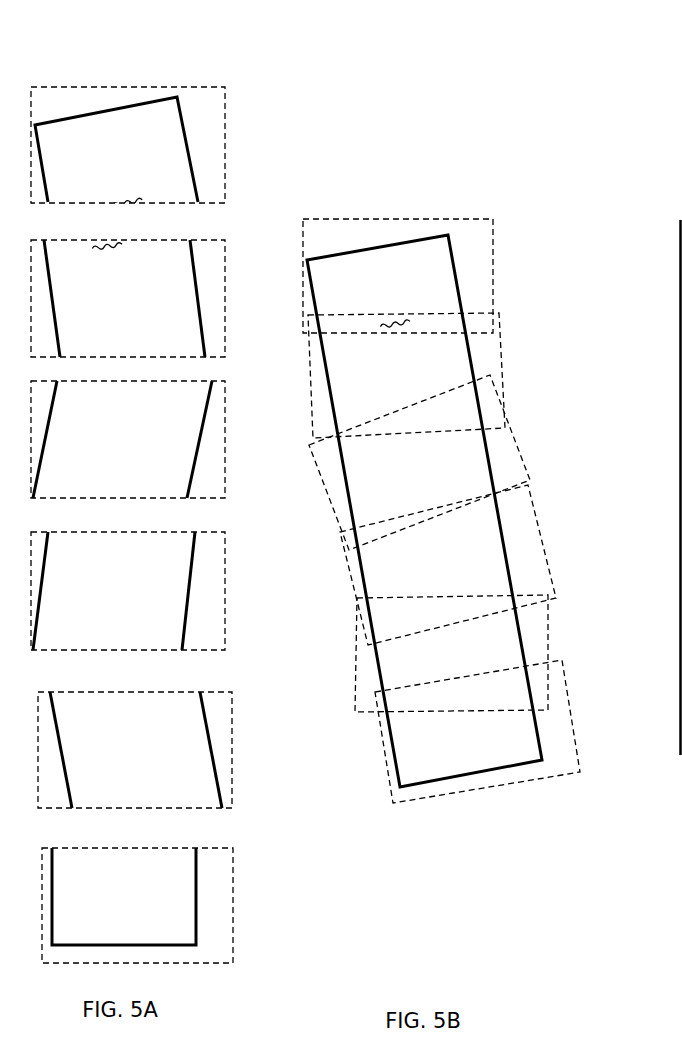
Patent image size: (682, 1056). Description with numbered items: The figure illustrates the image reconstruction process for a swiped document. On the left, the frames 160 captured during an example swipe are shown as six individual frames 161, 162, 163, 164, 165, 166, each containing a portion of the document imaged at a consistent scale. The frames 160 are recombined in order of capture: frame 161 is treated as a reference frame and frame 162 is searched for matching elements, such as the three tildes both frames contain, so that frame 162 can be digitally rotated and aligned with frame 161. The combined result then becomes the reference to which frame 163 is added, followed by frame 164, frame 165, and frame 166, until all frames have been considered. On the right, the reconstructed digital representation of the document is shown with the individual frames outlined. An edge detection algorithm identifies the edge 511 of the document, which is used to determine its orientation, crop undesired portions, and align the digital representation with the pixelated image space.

In FIG. 5A, the frames 160 is at (78, 72).
In FIG. 5A, the frame 161 is at (228, 181).
In FIG. 5B, the frame 161 is at (490, 242).
In FIG. 5A, the frame 162 is at (228, 320).
In FIG. 5B, the frame 162 is at (498, 372).
In FIG. 5A, the frame 163 is at (228, 455).
In FIG. 5B, the frame 163 is at (518, 457).
In FIG. 5A, the frame 164 is at (228, 608).
In FIG. 5B, the frame 164 is at (541, 558).
In FIG. 5A, the frame 165 is at (234, 763).
In FIG. 5B, the frame 165 is at (542, 643).
In FIG. 5A, the frame 166 is at (237, 922).
In FIG. 5B, the frame 166 is at (572, 748).
In FIG. 5B, the edge 511 is at (445, 783).